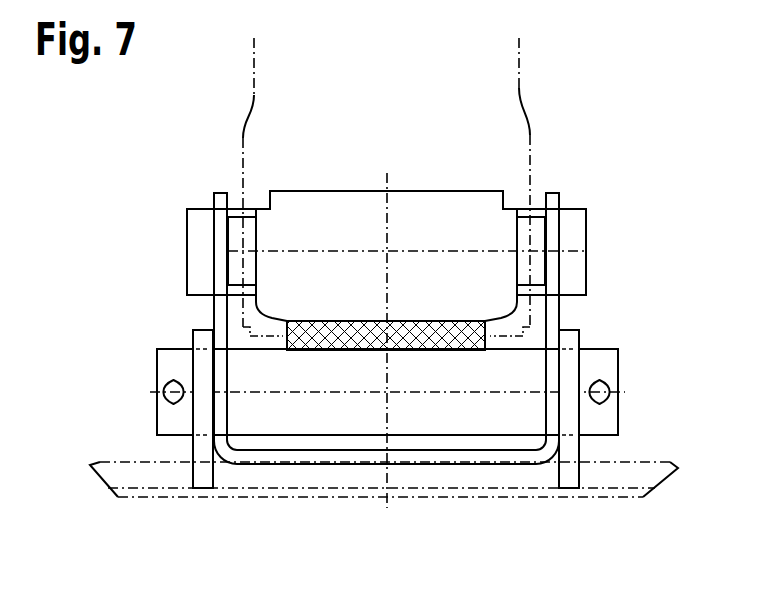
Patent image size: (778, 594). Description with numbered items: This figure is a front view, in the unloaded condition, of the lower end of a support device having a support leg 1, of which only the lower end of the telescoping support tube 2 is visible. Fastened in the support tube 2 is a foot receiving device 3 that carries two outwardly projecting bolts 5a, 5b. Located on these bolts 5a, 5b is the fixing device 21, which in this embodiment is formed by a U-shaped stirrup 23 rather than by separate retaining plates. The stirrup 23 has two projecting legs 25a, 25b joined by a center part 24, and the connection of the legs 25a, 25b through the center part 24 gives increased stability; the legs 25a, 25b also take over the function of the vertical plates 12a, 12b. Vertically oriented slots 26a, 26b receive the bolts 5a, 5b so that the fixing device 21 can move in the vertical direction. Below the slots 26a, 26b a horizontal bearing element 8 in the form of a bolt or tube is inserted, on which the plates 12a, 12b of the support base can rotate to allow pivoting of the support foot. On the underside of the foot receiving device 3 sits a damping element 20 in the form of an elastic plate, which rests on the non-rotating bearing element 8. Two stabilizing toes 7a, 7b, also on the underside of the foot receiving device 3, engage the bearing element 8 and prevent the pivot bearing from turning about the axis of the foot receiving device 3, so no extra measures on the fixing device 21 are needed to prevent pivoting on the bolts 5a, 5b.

The support leg 1 is at (548, 112).
The telescoping support tube 2 is at (522, 68).
The foot receiving device 3 is at (480, 202).
The bolt 5a is at (200, 223).
The bolt 5b is at (575, 223).
The stabilizing toe 7a is at (290, 349).
The stabilizing toe 7b is at (558, 287).
The bearing element 8 is at (267, 418).
The vertical plate 12a is at (202, 463).
The vertical plate 12b is at (567, 468).
The damping element 20 is at (480, 350).
The fixing device 21 is at (558, 267).
The U-shaped stirrup 23 is at (473, 469).
The center part 24 is at (333, 458).
The leg 25a is at (215, 320).
The leg 25b is at (558, 317).
The slot 26a is at (217, 302).
The slot 26b is at (550, 307).